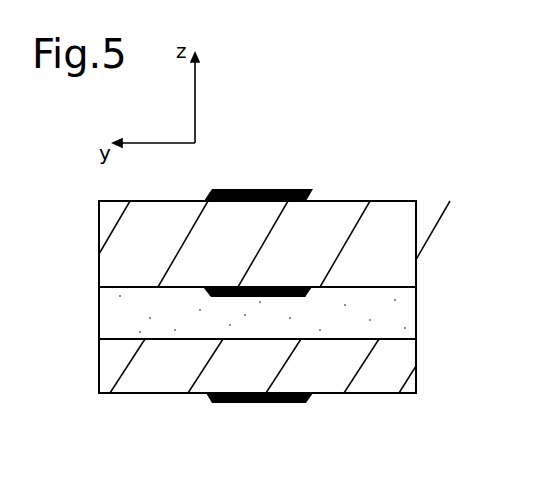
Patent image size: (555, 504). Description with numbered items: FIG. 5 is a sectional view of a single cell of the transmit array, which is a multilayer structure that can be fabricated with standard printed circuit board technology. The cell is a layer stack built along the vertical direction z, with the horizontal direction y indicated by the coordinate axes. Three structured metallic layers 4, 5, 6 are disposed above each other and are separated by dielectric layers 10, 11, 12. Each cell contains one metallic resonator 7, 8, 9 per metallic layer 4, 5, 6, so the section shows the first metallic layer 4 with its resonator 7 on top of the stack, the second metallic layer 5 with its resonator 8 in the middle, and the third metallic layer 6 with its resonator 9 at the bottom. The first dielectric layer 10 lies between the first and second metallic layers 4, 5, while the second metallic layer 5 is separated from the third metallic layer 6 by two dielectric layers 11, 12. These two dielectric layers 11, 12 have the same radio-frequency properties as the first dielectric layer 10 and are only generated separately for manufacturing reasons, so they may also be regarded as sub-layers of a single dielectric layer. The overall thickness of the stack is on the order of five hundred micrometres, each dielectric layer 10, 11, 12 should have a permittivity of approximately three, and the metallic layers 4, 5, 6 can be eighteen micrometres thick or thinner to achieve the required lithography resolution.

The first metallic layer 4 is at (329, 148).
The metallic resonator 7 is at (305, 190).
The second metallic layer 5 is at (162, 311).
The metallic resonator 8 is at (207, 293).
The third metallic layer 6 is at (159, 417).
The metallic resonator 9 is at (208, 397).
The first dielectric layer 10 is at (398, 250).
The dielectric layer 11 is at (400, 322).
The dielectric layer 12 is at (400, 387).